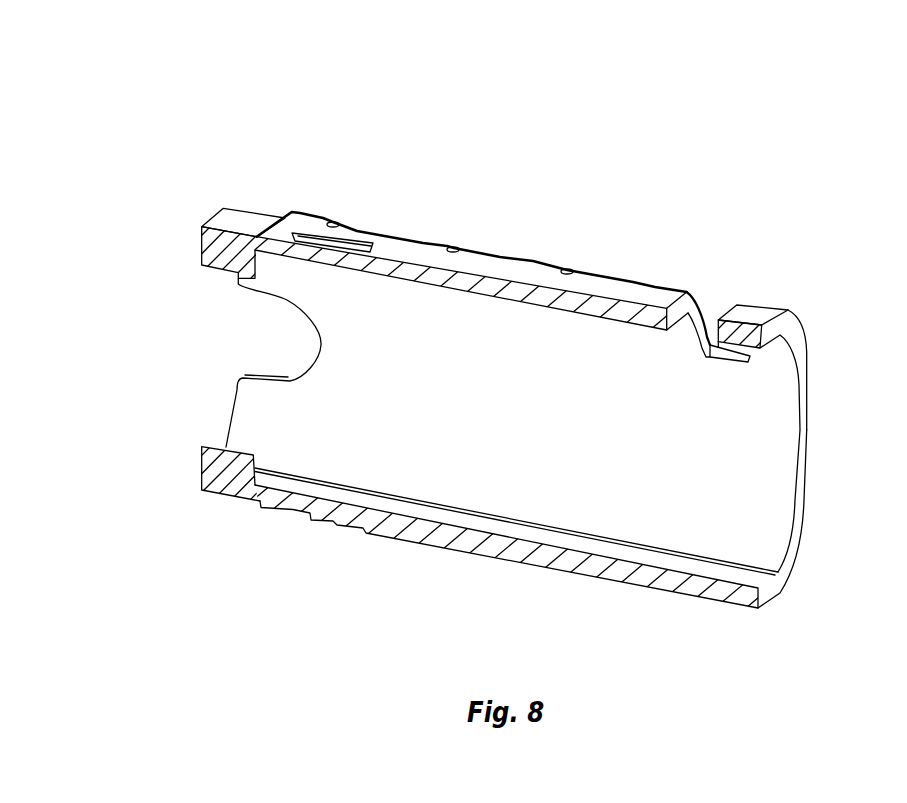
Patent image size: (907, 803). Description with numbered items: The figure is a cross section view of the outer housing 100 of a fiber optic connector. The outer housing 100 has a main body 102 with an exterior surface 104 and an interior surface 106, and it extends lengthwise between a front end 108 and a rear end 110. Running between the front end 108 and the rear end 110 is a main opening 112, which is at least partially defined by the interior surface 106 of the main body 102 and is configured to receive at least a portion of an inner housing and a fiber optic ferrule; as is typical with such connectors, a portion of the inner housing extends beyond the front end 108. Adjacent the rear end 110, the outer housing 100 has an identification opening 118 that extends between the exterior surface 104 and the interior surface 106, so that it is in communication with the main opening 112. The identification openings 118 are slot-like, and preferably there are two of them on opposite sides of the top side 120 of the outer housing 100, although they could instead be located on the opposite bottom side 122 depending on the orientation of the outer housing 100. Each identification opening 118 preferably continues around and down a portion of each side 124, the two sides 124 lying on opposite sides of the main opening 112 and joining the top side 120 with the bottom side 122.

The outer housing 100 is at (499, 112).
The main body 102 is at (340, 198).
The exterior surface 104 is at (417, 231).
The interior surface 106 is at (538, 434).
The front end 108 is at (201, 247).
The rear end 110 is at (797, 548).
The main opening 112 is at (722, 455).
The identification opening 118 is at (712, 310).
The top side 120 is at (543, 275).
The bottom side 122 is at (716, 604).
The side 124 is at (808, 375).